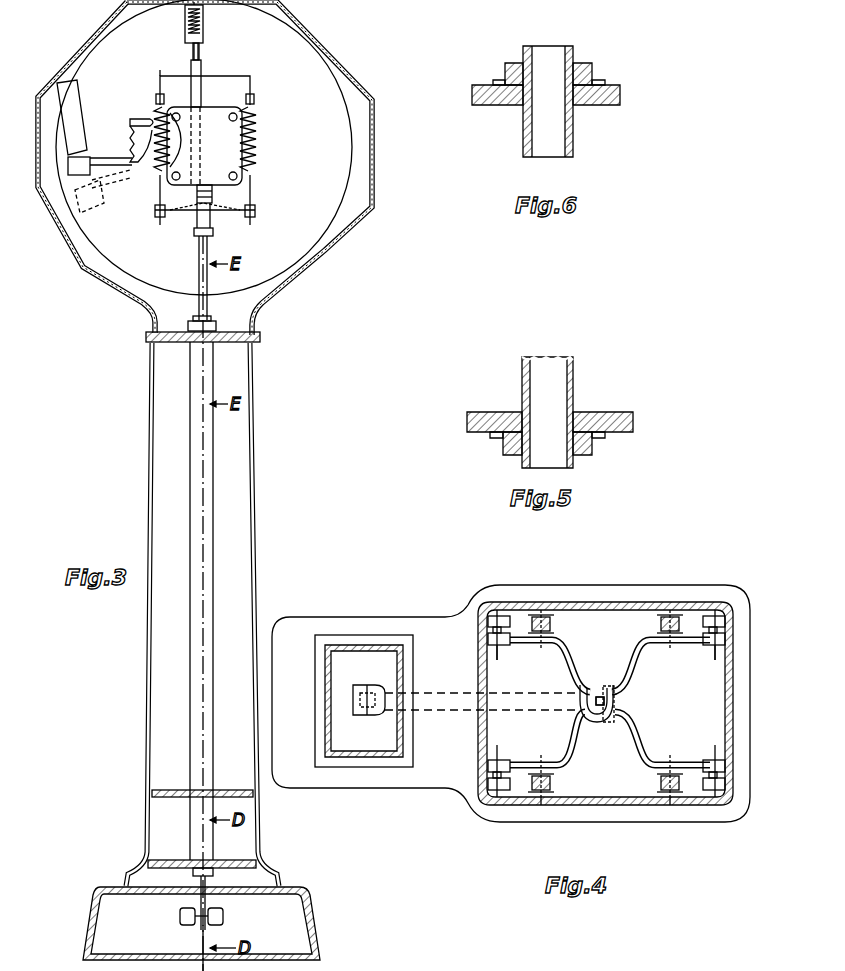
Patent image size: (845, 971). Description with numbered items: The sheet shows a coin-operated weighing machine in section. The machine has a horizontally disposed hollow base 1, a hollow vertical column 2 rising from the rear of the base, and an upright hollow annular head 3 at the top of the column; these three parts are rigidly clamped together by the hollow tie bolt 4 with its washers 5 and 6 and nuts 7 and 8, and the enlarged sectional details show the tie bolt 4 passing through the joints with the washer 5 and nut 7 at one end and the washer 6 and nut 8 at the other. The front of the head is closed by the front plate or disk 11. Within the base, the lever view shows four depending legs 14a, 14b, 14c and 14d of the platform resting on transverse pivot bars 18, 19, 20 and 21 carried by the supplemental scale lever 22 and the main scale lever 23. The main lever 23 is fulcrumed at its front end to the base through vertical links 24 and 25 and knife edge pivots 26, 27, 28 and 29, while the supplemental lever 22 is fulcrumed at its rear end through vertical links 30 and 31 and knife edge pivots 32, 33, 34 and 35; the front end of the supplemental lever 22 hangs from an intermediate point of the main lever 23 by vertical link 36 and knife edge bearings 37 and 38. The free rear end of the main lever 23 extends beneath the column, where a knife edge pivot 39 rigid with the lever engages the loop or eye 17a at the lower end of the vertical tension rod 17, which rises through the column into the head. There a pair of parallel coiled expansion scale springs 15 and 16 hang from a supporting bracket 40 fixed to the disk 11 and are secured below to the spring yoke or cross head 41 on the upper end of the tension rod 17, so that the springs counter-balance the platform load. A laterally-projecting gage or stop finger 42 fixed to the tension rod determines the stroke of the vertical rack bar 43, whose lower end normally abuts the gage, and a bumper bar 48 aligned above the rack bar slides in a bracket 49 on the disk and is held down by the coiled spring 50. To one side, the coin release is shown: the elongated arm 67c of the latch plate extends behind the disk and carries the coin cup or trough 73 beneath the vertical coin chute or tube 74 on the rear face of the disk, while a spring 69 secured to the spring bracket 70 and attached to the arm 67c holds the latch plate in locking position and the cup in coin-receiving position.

In FIG. 3, the hollow base 1 is at (85, 936).
In FIG. 4, the hollow base 1 is at (640, 586).
In FIG. 3, the hollow vertical column 2 is at (150, 645).
In FIG. 3, the hollow annular head 3 is at (318, 253).
In FIG. 3, the hollow tie bolt 4 is at (214, 530).
In FIG. 5, the hollow tie bolt 4 is at (574, 392).
In FIG. 6, the hollow tie bolt 4 is at (575, 138).
In FIG. 3, the washer 5 is at (226, 338).
In FIG. 6, the washer 5 is at (592, 84).
In FIG. 3, the washer 6 is at (185, 872).
In FIG. 5, the washer 6 is at (495, 433).
In FIG. 3, the nut 7 is at (219, 324).
In FIG. 6, the nut 7 is at (586, 64).
In FIG. 3, the nut 8 is at (196, 878).
In FIG. 5, the nut 8 is at (505, 448).
In FIG. 3, the front plate or disk 11 is at (333, 160).
In FIG. 4, the depending leg 14a is at (551, 624).
In FIG. 4, the depending leg 14b is at (660, 624).
In FIG. 4, the depending leg 14c is at (551, 783).
In FIG. 4, the depending leg 14d is at (660, 783).
In FIG. 3, the scale spring 15 is at (156, 182).
In FIG. 3, the scale spring 16 is at (253, 143).
In FIG. 3, the tension rod 17 is at (207, 897).
In FIG. 3, the loop or eye 17a is at (203, 928).
In FIG. 4, the transverse pivot bar 18 is at (543, 618).
In FIG. 4, the transverse pivot bar 19 is at (670, 618).
In FIG. 4, the transverse pivot bar 20 is at (541, 796).
In FIG. 4, the transverse pivot bar 21 is at (670, 796).
In FIG. 4, the supplemental scale lever 22 is at (578, 752).
In FIG. 4, the main scale lever 23 is at (455, 705).
In FIG. 4, the vertical link 24 is at (722, 635).
In FIG. 4, the vertical link 25 is at (722, 786).
In FIG. 4, the knife edge pivot 26 is at (716, 615).
In FIG. 4, the knife edge pivot 27 is at (713, 648).
In FIG. 4, the knife edge pivot 28 is at (714, 768).
In FIG. 4, the knife edge pivot 29 is at (712, 798).
In FIG. 4, the vertical link 30 is at (488, 622).
In FIG. 4, the vertical link 31 is at (488, 784).
In FIG. 4, the knife edge pivot 32 is at (500, 615).
In FIG. 4, the knife edge pivot 33 is at (499, 648).
In FIG. 4, the knife edge pivot 34 is at (502, 763).
In FIG. 4, the knife edge pivot 35 is at (498, 796).
In FIG. 4, the vertical link 36 is at (616, 706).
In FIG. 4, the knife edge bearing 37 is at (592, 708).
In FIG. 4, the knife edge bearing 38 is at (592, 708).
In FIG. 3, the knife edge pivot 39 is at (180, 918).
In FIG. 4, the knife edge pivot 39 is at (353, 695).
In FIG. 3, the supporting bracket 40 is at (226, 96).
In FIG. 3, the spring yoke or cross head 41 is at (190, 216).
In FIG. 3, the gage or stop finger 42 is at (200, 240).
In FIG. 3, the vertical bar 43 is at (201, 72).
In FIG. 3, the bar 48 is at (199, 52).
In FIG. 3, the bracket 49 is at (193, 46).
In FIG. 3, the coiled spring 50 is at (185, 24).
In FIG. 3, the elongated arm 67c is at (126, 160).
In FIG. 3, the spring 69 is at (130, 152).
In FIG. 3, the spring bracket 70 is at (138, 118).
In FIG. 3, the coin cup or trough 73 is at (80, 170).
In FIG. 3, the coin chute or tube 74 is at (75, 133).